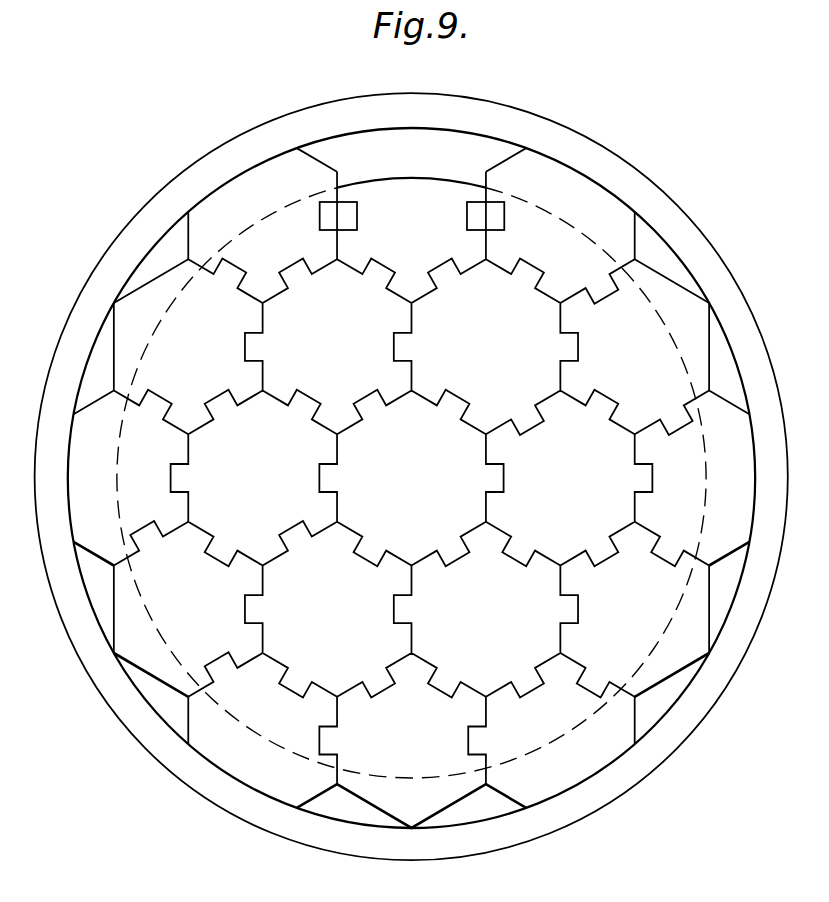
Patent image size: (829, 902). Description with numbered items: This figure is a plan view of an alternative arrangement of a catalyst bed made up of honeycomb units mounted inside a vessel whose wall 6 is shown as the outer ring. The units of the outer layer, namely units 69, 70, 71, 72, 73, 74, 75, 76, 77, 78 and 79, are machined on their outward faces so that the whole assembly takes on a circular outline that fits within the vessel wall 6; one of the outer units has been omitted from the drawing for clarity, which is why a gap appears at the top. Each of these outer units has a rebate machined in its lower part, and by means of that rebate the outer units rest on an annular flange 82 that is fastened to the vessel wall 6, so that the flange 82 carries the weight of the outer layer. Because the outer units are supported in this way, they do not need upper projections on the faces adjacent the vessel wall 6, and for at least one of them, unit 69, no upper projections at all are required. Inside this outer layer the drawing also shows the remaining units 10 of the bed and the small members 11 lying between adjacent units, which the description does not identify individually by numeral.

The vessel wall 6 is at (478, 107).
The hexagonal elements with interlocking notches 10 is at (380, 268).
The connecting members 11 is at (351, 218).
The outer layer unit 69 is at (288, 250).
The outer layer unit 70 is at (177, 363).
The outer layer unit 71 is at (122, 488).
The outer layer unit 72 is at (177, 619).
The outer layer unit 73 is at (262, 731).
The outer layer unit 74 is at (394, 752).
The outer layer unit 75 is at (532, 731).
The outer layer unit 76 is at (621, 619).
The outer layer unit 77 is at (671, 488).
The outer layer unit 78 is at (621, 363).
The outer layer unit 79 is at (571, 250).
The annular flange 82 is at (405, 143).